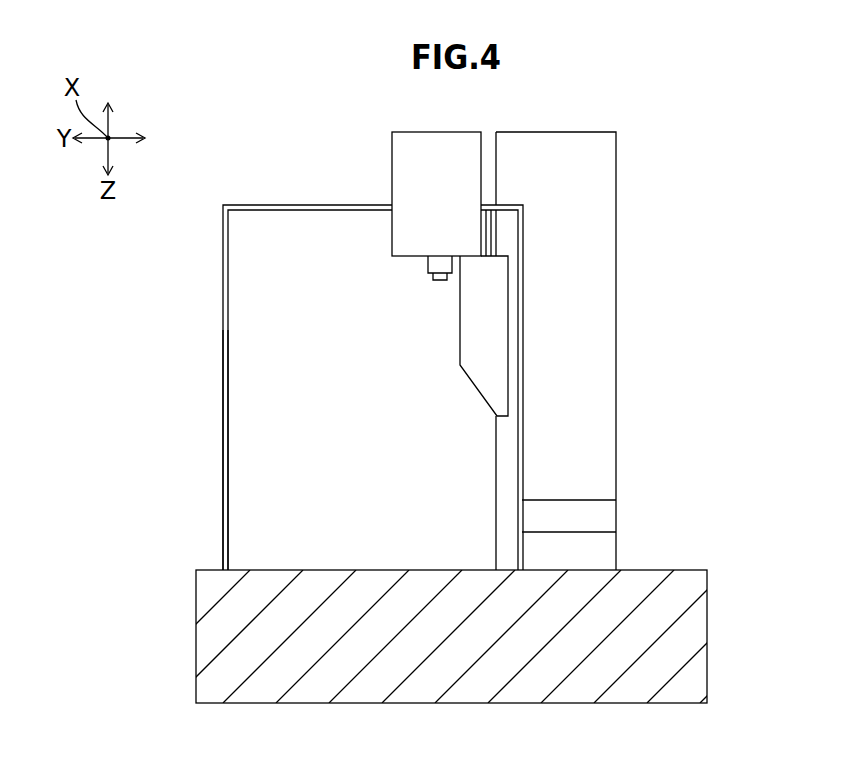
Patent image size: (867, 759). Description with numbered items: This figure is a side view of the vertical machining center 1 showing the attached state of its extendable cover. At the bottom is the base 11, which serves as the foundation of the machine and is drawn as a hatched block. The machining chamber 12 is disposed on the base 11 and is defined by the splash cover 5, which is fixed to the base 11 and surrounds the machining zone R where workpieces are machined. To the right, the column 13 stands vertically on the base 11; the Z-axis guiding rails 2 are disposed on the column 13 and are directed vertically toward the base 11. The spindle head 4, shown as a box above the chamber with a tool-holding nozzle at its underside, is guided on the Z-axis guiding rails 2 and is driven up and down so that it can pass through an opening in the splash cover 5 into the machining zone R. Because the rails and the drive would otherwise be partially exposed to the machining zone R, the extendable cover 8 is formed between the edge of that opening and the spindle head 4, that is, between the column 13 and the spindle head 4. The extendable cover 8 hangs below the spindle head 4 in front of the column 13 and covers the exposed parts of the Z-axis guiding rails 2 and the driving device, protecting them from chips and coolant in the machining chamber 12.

The vertical machining center 1 is at (691, 142).
The Z-axis guiding rails 2 is at (490, 232).
The spindle head 4 is at (442, 125).
The splash cover 5 is at (208, 337).
The extendable cover 8 is at (468, 324).
The base 11 is at (707, 637).
The machining chamber 12 is at (260, 175).
The column 13 is at (616, 326).
The machining zone R is at (357, 472).